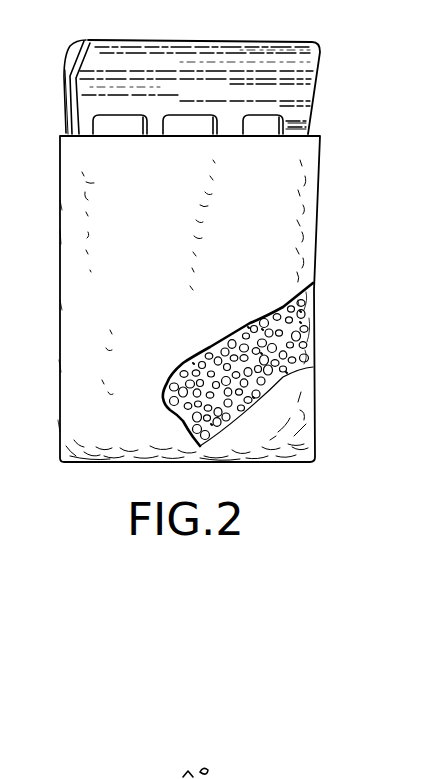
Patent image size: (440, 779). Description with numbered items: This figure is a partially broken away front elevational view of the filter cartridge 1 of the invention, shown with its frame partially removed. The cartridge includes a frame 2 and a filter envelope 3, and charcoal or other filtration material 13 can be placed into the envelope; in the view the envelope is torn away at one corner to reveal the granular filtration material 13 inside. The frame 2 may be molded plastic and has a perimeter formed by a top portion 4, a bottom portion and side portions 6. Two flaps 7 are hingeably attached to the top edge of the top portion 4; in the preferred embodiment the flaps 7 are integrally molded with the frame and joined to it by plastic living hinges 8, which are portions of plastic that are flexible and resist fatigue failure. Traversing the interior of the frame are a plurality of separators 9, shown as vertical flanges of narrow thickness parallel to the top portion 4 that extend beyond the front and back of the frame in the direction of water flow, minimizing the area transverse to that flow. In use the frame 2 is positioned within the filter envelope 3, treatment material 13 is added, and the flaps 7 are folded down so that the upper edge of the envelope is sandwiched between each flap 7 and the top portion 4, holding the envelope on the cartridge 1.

The filter cartridge 1 is at (211, 231).
The frame 2 is at (192, 75).
The filter envelope 3 is at (211, 236).
The top portion 4 is at (309, 338).
The side portions 6 is at (73, 125).
The flaps 7 is at (278, 55).
The plastic living hinges 8 is at (88, 75).
The separators 9 is at (156, 125).
The filtration material 13 is at (309, 291).